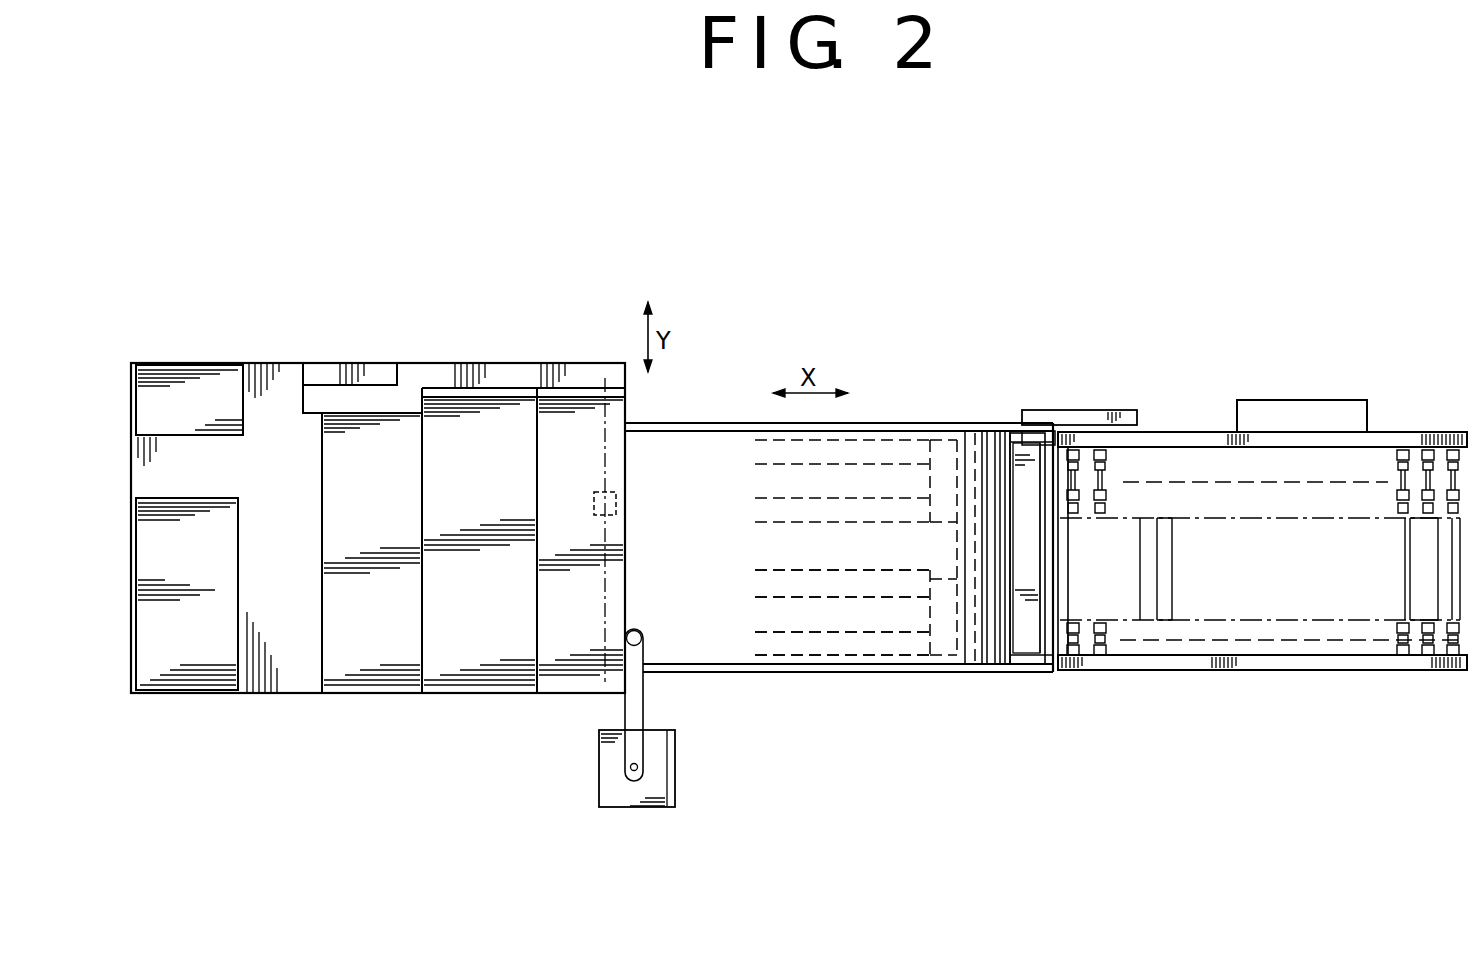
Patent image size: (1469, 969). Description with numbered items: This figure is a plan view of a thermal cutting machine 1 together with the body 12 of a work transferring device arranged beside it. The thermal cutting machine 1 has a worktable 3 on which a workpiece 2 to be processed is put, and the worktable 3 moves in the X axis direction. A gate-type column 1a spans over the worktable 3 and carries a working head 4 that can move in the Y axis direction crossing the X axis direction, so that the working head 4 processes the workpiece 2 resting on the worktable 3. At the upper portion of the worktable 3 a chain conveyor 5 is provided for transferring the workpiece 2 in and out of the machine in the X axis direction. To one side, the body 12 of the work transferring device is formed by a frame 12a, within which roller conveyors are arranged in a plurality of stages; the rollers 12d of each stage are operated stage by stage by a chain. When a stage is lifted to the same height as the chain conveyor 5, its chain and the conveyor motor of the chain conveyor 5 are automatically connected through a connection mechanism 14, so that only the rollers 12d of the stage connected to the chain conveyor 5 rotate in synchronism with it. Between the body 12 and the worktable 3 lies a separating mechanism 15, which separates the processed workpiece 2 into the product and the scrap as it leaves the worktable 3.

The thermal cutting machine 1 is at (463, 707).
The gate-type column 1a is at (552, 663).
The workpiece 2 is at (913, 468).
The worktable 3 is at (892, 423).
The working head 4 is at (614, 515).
The chain conveyor 5 is at (882, 623).
The body of the work transferring device 12 is at (1430, 400).
The frame 12a is at (1208, 460).
The rollers 12d is at (1427, 463).
The connection mechanism 14 is at (1067, 413).
The separating mechanism 15 is at (1030, 637).